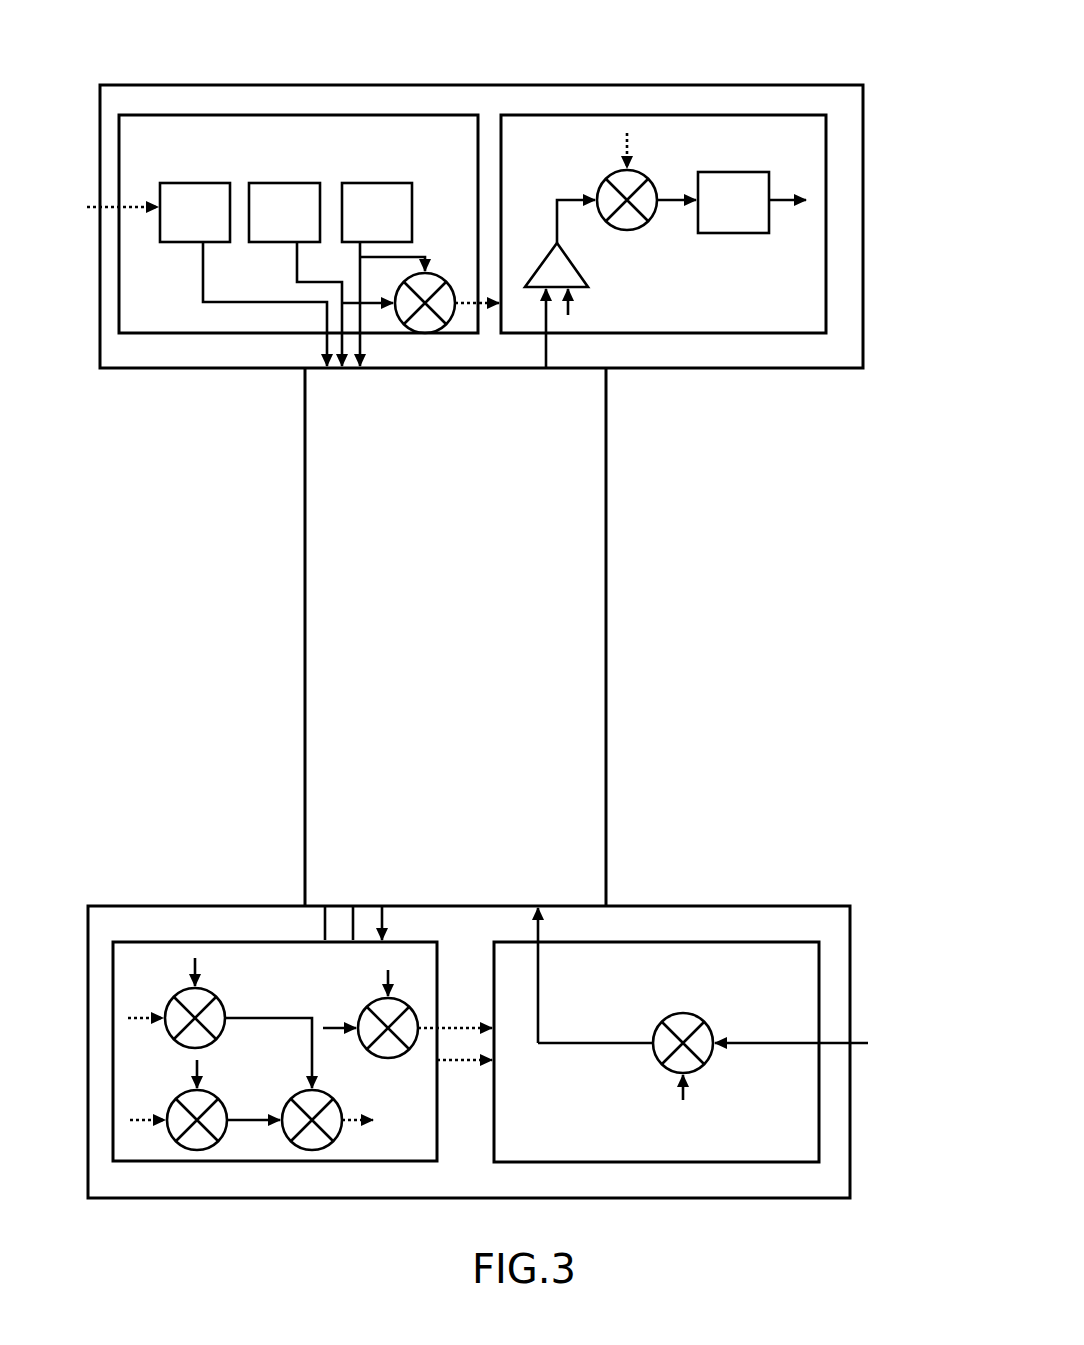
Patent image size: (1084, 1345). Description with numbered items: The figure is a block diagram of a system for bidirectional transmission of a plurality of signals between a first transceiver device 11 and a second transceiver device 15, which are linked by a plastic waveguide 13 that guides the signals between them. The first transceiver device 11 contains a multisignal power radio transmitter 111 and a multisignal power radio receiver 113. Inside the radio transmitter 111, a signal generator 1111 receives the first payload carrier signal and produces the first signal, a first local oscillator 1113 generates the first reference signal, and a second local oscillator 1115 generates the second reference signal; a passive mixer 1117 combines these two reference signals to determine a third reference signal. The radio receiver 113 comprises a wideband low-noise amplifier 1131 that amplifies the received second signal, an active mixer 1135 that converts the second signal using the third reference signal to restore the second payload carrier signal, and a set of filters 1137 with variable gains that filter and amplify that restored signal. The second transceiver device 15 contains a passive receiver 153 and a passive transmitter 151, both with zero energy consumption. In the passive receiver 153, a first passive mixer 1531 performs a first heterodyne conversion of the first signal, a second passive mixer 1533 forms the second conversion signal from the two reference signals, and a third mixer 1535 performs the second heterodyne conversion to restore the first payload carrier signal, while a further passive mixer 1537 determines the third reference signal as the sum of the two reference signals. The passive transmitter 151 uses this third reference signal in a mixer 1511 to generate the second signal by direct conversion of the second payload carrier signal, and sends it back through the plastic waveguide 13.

The first transceiver device 11 is at (630, 372).
The multisignal power radio transmitter 111 is at (155, 337).
The multisignal power radio receiver 113 is at (766, 338).
The signal generator 1111 is at (180, 181).
The first local oscillator 1113 is at (308, 181).
The second local oscillator 1115 is at (378, 181).
The passive mixer 1117 is at (438, 272).
The wideband low-noise amplifier 1131 is at (582, 273).
The active mixer 1135 is at (600, 188).
The set of filters 1137 is at (734, 170).
The plastic waveguide 13 is at (610, 590).
The second transceiver device 15 is at (629, 903).
The passive transmitter 151 is at (761, 939).
The passive receiver 153 is at (141, 939).
The mixer 1511 is at (662, 1023).
The first passive mixer 1531 is at (252, 978).
The second passive mixer 1533 is at (218, 1100).
The third mixer 1535 is at (375, 1083).
The passive mixer 1537 is at (367, 1005).